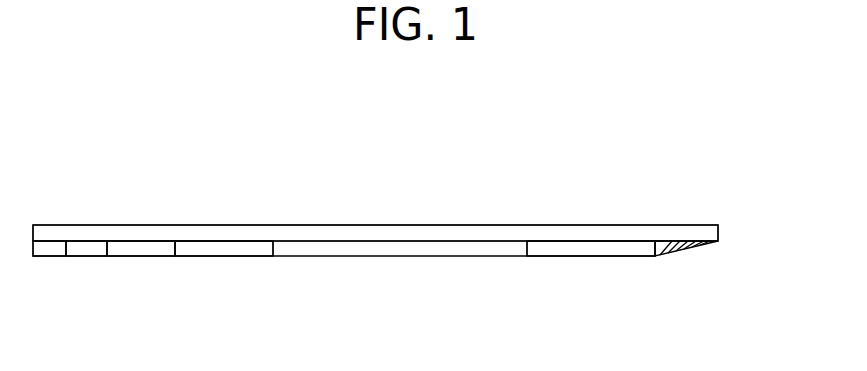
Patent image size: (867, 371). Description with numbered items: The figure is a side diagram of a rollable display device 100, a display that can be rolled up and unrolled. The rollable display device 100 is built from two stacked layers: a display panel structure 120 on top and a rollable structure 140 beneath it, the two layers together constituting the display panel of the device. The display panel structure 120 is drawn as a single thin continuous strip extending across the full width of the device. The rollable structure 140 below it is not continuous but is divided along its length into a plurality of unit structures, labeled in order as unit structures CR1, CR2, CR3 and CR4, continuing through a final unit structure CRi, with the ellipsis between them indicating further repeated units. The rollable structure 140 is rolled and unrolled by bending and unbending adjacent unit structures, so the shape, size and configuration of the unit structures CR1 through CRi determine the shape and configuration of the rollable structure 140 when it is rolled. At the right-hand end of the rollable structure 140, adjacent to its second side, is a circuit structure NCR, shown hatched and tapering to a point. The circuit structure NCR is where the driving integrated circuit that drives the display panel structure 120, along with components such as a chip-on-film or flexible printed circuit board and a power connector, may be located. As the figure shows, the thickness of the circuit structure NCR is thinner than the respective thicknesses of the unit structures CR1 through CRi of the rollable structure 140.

The rollable display device 100 is at (490, 161).
The display panel structure 120 is at (330, 224).
The rollable structure 140 is at (330, 257).
The unit structure CR1 is at (43, 265).
The unit structure CR2 is at (90, 265).
The unit structure CR3 is at (147, 265).
The unit structure CR4 is at (227, 265).
The unit structure CRi is at (590, 265).
The circuit structure NCR is at (682, 258).